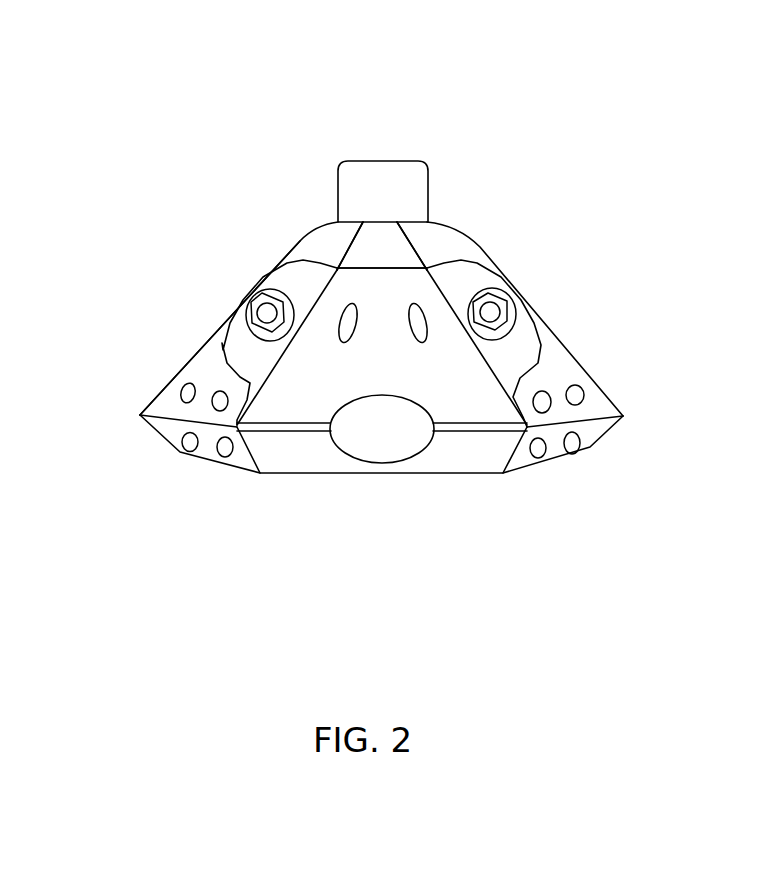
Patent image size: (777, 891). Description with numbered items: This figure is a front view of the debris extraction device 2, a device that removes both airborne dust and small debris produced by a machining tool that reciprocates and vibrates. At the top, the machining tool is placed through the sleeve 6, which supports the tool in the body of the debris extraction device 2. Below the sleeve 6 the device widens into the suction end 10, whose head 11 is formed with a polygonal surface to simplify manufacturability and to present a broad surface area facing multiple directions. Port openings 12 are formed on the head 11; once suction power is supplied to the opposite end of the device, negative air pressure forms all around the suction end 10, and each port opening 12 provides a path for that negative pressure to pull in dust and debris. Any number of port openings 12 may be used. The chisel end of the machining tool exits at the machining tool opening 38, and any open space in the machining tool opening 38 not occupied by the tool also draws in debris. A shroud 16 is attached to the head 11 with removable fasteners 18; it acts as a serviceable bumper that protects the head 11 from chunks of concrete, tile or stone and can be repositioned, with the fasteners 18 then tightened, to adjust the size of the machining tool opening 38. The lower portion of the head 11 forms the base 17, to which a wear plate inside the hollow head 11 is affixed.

The debris extraction device 2 is at (206, 86).
The sleeve 6 is at (390, 183).
The suction end 10 is at (598, 303).
The head 11 is at (152, 343).
The port openings 12 is at (418, 330).
The shroud 16 is at (312, 287).
The base 17 is at (450, 472).
The removable fasteners 18 is at (260, 305).
The machining tool opening 38 is at (380, 440).